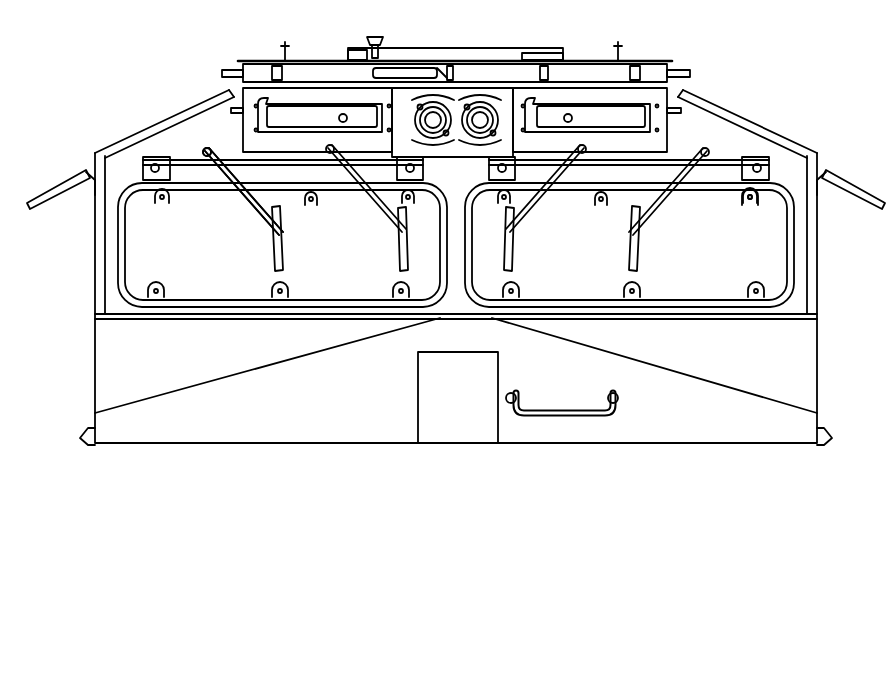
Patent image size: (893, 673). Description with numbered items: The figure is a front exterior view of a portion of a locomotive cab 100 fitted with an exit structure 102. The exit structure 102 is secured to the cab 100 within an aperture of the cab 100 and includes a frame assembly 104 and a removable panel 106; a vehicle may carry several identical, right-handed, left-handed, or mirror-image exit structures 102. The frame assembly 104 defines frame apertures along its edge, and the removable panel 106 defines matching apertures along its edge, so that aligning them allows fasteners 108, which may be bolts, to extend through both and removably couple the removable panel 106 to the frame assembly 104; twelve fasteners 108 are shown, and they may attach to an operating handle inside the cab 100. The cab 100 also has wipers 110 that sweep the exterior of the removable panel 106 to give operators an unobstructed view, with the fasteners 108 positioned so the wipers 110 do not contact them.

The locomotive cab 100 is at (474, 567).
The exit structure 102 is at (205, 327).
The frame assembly 104 is at (117, 302).
The removable panel 106 is at (231, 267).
The fastener 108 is at (744, 207).
The wiper 110 is at (205, 145).